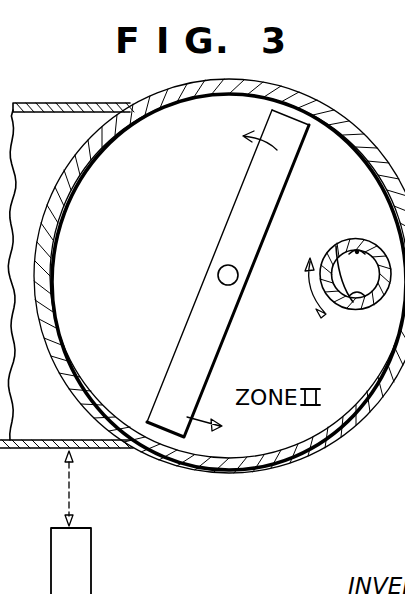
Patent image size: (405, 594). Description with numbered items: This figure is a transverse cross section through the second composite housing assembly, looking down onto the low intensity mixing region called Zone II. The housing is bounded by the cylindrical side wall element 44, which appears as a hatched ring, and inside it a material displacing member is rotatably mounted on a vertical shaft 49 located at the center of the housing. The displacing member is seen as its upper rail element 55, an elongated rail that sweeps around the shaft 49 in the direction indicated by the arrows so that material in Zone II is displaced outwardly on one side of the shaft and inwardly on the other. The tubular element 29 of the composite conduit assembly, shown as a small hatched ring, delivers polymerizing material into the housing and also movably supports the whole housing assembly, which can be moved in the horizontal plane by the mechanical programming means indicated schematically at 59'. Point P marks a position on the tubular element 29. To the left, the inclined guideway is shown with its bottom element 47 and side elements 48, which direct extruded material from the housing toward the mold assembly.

The cylindrical side wall element 44 is at (187, 461).
The bottom element of guideway 47 is at (67, 291).
The side elements of guideway 48 is at (12, 449).
The vertical shaft 49 is at (218, 277).
The upper rail element 55 is at (192, 400).
The tubular element 29 is at (348, 275).
The point P on roller P is at (358, 251).
The duct / conduit 59' is at (91, 522).